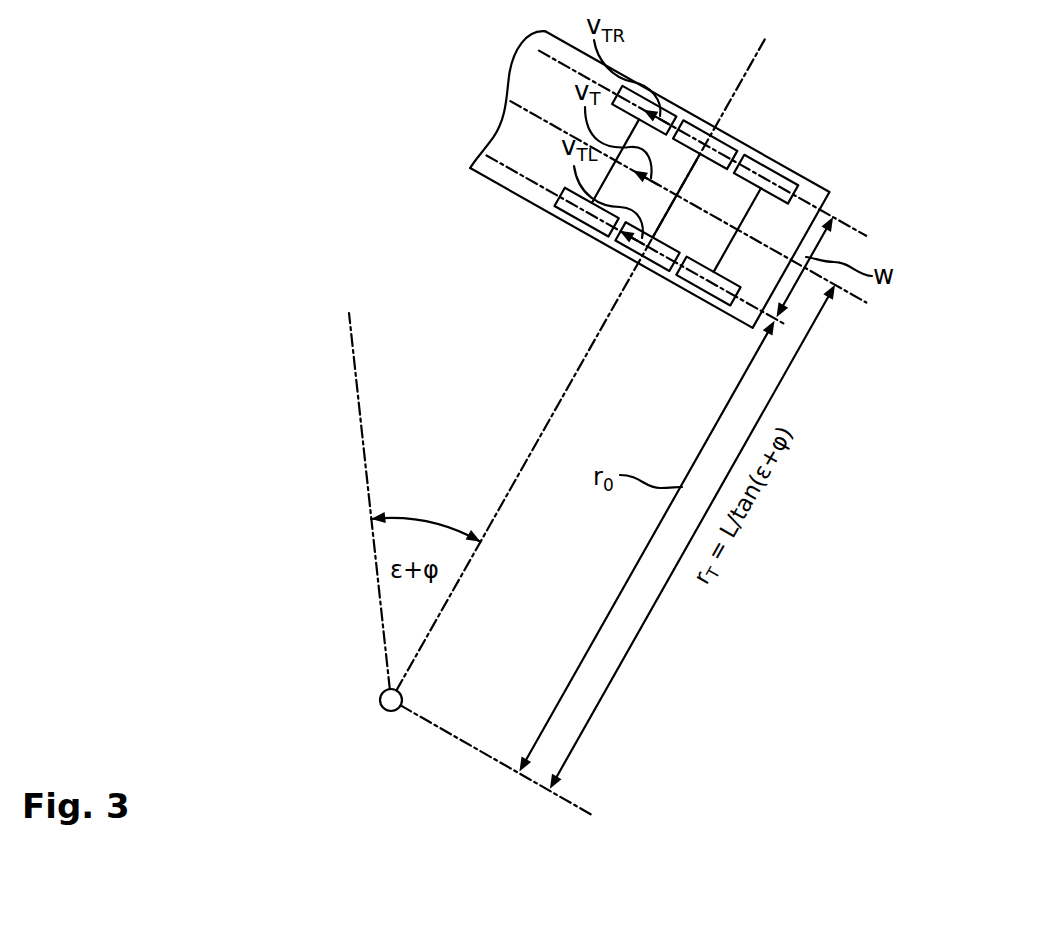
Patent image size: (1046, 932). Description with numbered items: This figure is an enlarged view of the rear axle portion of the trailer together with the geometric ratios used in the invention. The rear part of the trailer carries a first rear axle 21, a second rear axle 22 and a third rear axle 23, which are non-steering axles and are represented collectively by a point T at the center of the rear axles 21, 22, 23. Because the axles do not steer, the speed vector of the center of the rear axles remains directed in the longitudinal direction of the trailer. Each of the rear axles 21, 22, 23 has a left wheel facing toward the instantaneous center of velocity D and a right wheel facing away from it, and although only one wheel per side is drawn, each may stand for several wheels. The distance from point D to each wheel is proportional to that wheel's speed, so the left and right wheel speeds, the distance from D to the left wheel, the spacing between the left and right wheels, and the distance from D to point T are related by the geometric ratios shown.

The first rear axle 21 is at (576, 224).
The second rear axle 22 is at (637, 262).
The third rear axle 23 is at (697, 302).
The center of the rear axles T is at (677, 195).
The instantaneous center of velocity D is at (389, 691).